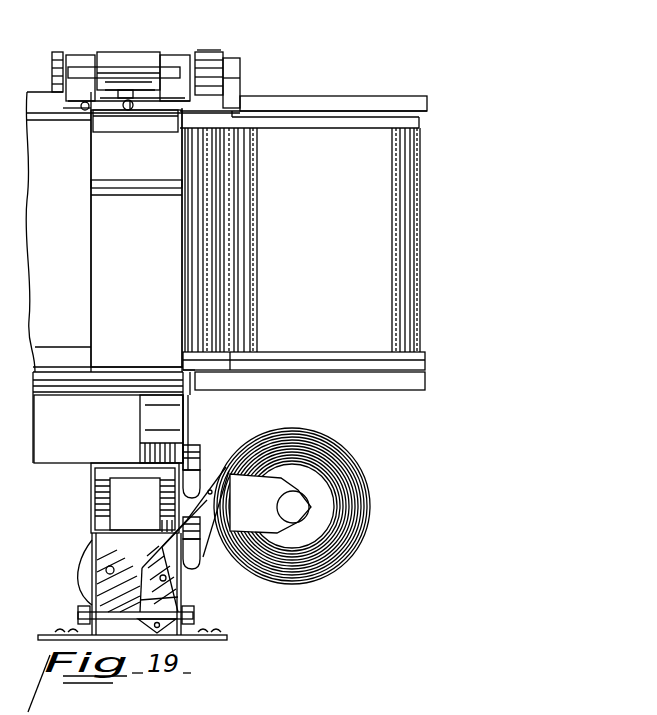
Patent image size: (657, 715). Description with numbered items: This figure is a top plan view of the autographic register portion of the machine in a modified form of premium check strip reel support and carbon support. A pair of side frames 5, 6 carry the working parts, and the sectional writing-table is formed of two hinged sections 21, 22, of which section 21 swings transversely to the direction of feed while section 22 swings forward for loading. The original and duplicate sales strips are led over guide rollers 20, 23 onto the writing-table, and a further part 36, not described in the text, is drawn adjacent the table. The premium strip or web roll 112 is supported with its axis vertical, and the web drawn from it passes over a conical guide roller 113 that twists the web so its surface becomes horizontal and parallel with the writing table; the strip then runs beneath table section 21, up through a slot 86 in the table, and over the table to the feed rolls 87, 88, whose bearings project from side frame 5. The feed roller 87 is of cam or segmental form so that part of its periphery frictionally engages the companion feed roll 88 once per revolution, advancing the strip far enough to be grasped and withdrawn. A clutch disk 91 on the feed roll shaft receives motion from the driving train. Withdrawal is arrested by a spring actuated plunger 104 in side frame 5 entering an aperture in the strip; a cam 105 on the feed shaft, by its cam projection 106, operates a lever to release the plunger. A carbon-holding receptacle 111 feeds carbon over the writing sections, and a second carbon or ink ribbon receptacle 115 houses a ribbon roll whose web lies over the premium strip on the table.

The clutch disk 91 is at (57, 50).
The feed roll 88 is at (118, 72).
The feed roller 87 is at (148, 62).
The cam 105 is at (210, 50).
The cam projection 106 is at (232, 63).
The side frame 6 is at (356, 118).
The spring actuated plunger 104 is at (130, 108).
The slot 86 is at (134, 186).
The writing-table section 22 is at (104, 232).
The writing-table section 21 is at (136, 240).
The guide roller 23 is at (213, 253).
The guide roller 20 is at (230, 298).
The guide strip 36 is at (188, 300).
The side frame 5 is at (318, 366).
The carbon-holding receptacle 111 is at (188, 416).
The second carbon or ink ribbon receptacle 115 is at (103, 492).
The premium strip or web roll 112 is at (370, 530).
The conical guide roller 113 is at (147, 597).